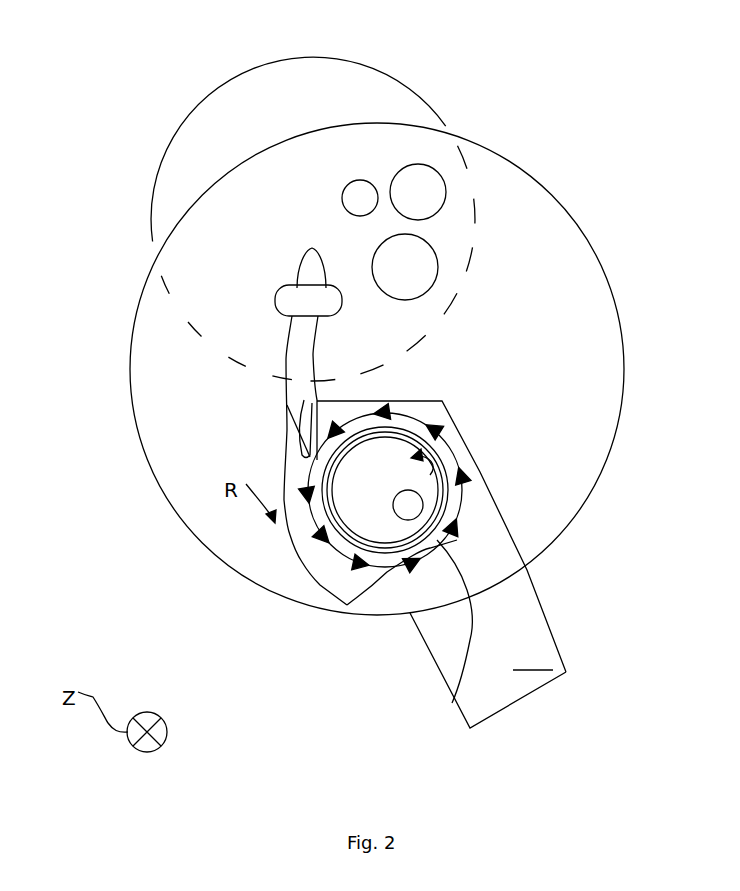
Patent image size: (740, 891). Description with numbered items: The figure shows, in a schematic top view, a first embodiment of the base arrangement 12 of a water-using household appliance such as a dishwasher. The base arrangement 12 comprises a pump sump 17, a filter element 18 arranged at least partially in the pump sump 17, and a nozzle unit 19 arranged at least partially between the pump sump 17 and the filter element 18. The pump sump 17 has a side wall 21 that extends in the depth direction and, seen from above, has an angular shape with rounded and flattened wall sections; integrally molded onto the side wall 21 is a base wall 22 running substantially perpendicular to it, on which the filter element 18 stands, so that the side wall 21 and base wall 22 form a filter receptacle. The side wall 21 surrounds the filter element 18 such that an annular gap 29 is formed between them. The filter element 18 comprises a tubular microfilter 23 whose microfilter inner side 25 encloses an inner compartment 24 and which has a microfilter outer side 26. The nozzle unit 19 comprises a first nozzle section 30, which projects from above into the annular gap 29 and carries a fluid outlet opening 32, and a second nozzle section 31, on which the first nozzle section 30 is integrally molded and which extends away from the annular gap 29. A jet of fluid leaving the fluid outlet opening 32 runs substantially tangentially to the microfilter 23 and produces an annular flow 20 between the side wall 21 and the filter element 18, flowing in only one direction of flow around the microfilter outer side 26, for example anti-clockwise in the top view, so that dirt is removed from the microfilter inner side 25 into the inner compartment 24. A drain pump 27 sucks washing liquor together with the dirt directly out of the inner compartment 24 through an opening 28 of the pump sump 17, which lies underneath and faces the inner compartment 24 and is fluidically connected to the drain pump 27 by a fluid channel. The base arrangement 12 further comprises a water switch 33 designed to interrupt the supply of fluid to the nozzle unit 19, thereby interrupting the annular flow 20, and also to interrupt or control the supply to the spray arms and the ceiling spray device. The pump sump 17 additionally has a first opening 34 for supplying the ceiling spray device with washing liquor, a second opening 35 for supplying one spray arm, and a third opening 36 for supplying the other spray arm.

The base arrangement 12 is at (634, 205).
The pump sump 17 is at (621, 325).
The filter element 18 is at (365, 578).
The nozzle unit 19 is at (289, 399).
The annular flow 20 is at (340, 543).
The side wall 21 is at (405, 395).
The base wall 22 is at (423, 512).
The microfilter 23 is at (347, 604).
The inner compartment 24 is at (391, 505).
The microfilter inner side 25 is at (440, 465).
The microfilter outer side 26 is at (452, 703).
The drain pump 27 is at (563, 675).
The opening 28 is at (458, 522).
The annular gap 29 is at (302, 462).
The first nozzle section 30 is at (297, 428).
The second nozzle section 31 is at (295, 385).
The fluid outlet opening 32 is at (350, 401).
The water switch 33 is at (192, 150).
The first opening 34 is at (358, 178).
The second opening 35 is at (422, 163).
The third opening 36 is at (430, 245).